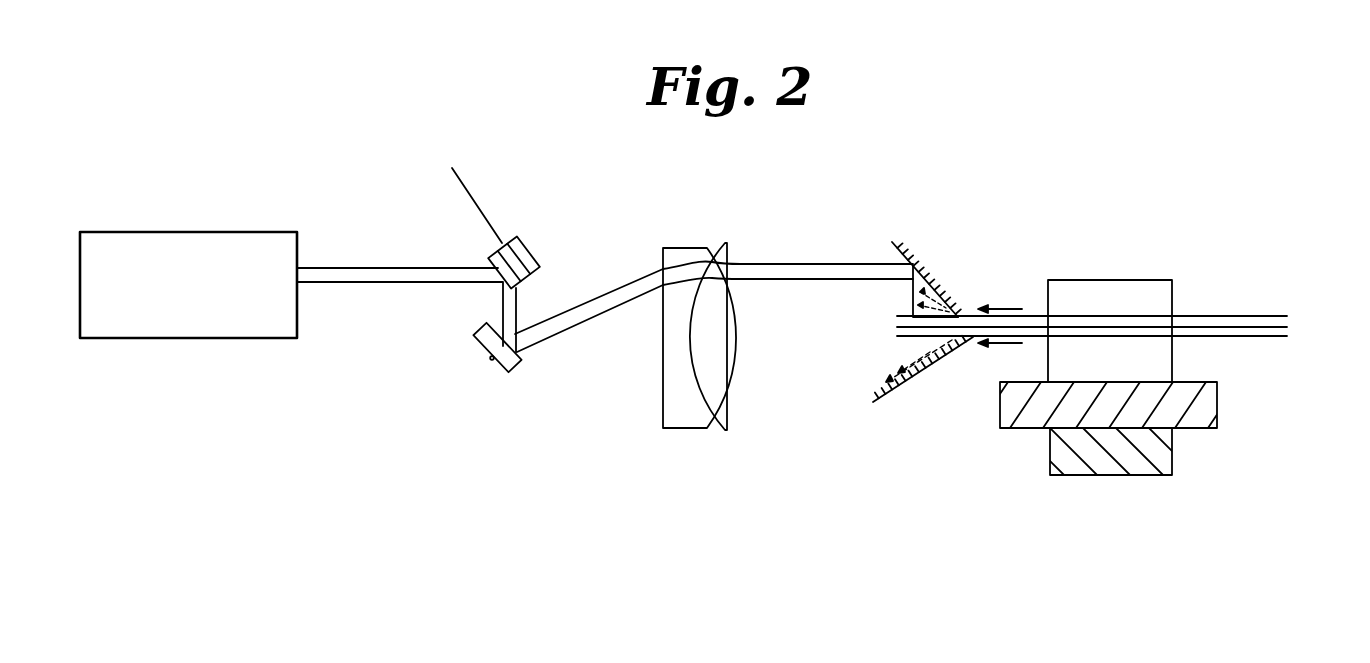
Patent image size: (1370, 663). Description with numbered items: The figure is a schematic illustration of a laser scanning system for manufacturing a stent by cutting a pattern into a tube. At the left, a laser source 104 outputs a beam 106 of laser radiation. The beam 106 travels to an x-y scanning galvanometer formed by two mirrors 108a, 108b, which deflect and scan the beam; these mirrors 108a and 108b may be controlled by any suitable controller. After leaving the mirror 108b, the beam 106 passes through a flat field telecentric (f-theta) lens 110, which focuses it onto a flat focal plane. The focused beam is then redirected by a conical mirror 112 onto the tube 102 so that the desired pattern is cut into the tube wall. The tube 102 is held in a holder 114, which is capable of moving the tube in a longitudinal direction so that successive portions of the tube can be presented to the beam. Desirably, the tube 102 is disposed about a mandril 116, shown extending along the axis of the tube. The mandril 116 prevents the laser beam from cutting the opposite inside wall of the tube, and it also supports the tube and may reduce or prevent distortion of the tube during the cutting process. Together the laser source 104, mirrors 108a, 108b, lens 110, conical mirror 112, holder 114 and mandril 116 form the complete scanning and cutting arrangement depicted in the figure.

The tube 102 is at (1032, 337).
The laser source 104 is at (217, 338).
The beam 106 is at (418, 282).
The mirror 108a is at (541, 252).
The mirror 108b is at (494, 361).
The flat field telecentric (f-theta) lens 110 is at (663, 428).
The conical mirror 112 is at (914, 263).
The holder 114 is at (1148, 475).
The mandril 116 is at (1285, 323).